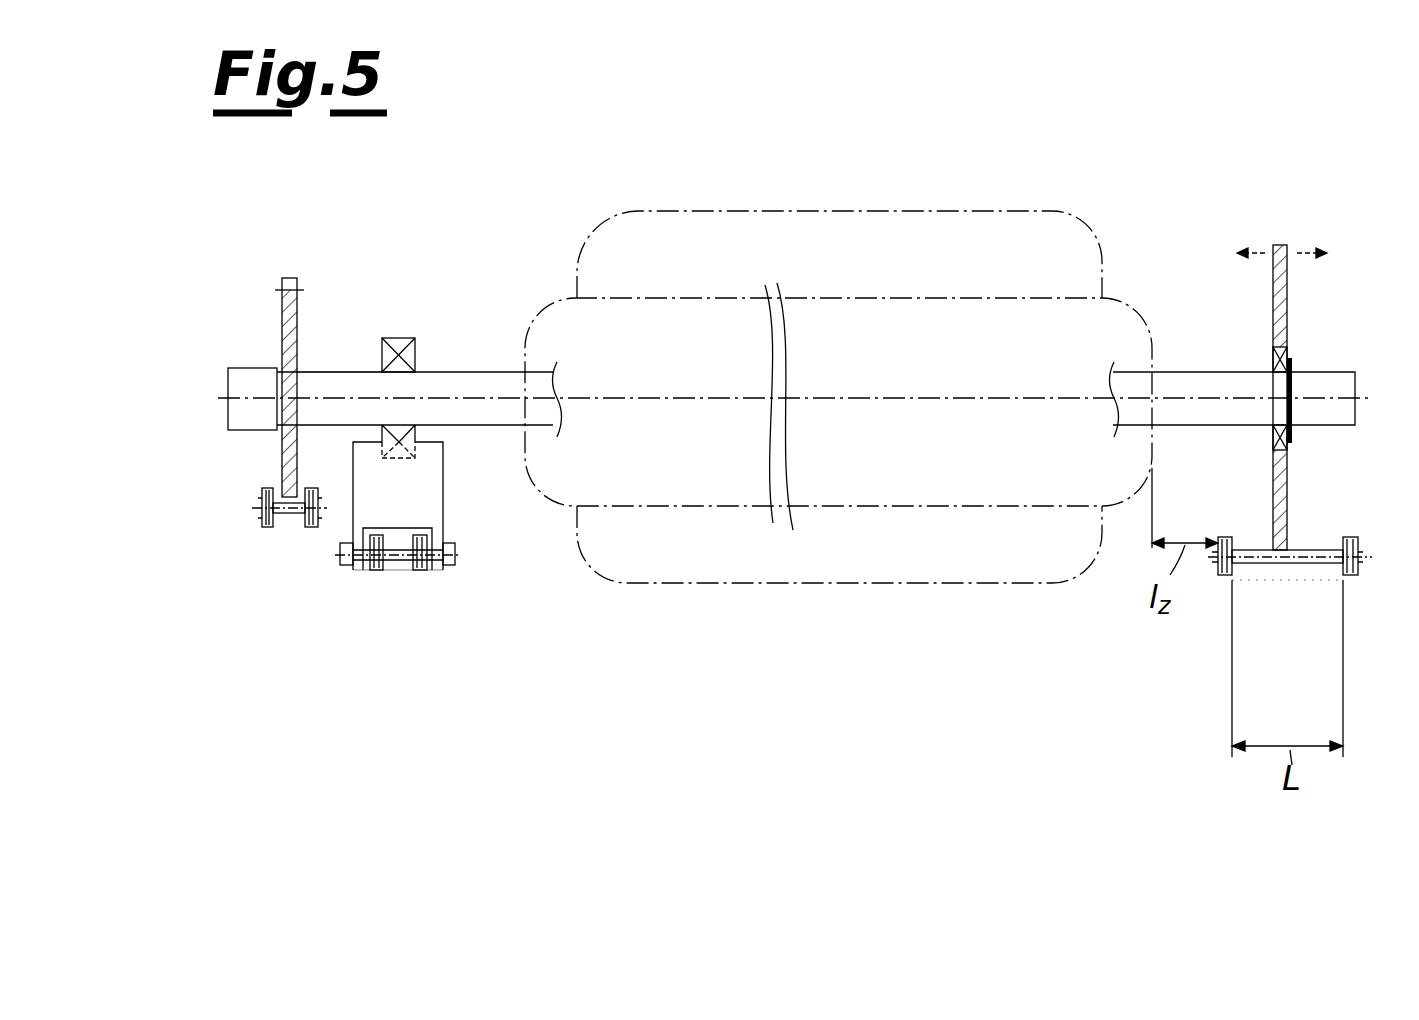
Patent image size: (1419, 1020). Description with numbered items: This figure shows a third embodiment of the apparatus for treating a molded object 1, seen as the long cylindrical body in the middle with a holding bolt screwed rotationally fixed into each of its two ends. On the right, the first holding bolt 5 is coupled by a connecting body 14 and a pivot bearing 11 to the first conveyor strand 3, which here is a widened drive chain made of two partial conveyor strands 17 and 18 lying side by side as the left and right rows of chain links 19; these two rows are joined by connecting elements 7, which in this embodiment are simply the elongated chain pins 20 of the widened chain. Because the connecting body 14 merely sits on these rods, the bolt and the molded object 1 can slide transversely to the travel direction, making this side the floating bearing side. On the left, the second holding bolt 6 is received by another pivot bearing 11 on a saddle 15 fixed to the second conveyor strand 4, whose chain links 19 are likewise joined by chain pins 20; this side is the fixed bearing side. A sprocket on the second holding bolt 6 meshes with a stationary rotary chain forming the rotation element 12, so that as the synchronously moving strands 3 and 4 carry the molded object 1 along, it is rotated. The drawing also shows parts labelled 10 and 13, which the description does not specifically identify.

The molded object 1 is at (915, 298).
The first conveyor strand 3 is at (1310, 636).
The second conveyor strand 4 is at (400, 605).
The first holding bolt 5 is at (1329, 372).
The second holding bolt 6 is at (331, 372).
The connecting element 7 is at (1283, 556).
The roll transport device 10 is at (201, 474).
The pivot bearing 11 is at (398, 338).
The rotation element 12 is at (284, 540).
The support plate 13 is at (283, 320).
The connecting body 14 is at (1287, 300).
The saddle 15 is at (438, 500).
The partial conveyor strand 17 is at (1220, 582).
The partial conveyor strand 18 is at (1351, 582).
The chain link 19 is at (375, 575).
The chain pin 20 is at (394, 573).